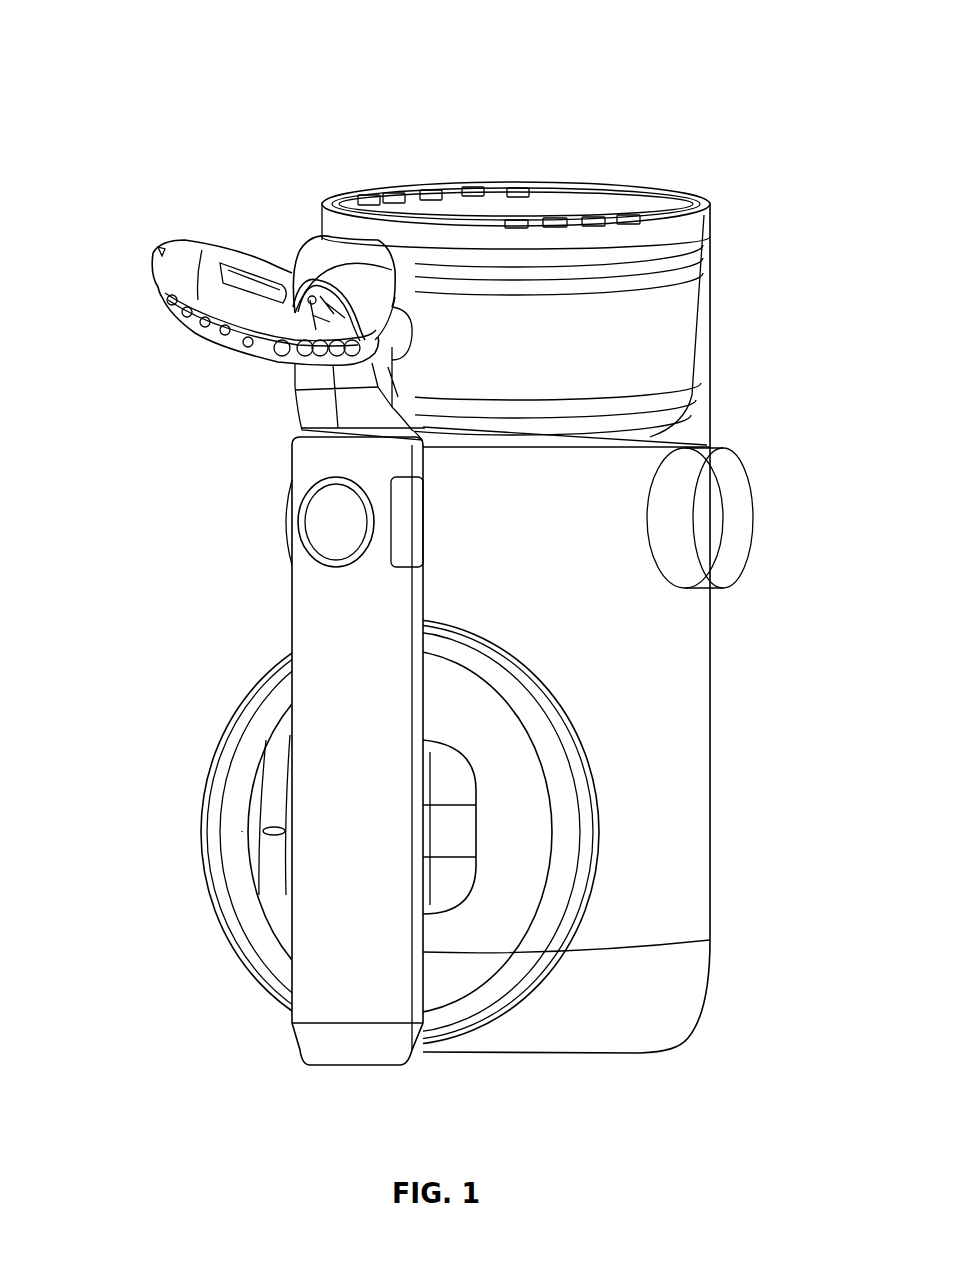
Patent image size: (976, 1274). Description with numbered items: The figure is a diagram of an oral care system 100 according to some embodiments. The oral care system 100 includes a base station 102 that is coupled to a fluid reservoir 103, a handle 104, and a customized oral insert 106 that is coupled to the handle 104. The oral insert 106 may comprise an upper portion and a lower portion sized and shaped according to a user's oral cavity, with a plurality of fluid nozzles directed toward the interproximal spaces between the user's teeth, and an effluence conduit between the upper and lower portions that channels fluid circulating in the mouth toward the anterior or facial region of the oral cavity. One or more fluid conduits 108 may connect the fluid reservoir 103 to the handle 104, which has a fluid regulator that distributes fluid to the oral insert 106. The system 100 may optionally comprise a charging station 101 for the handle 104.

The oral care system 100 is at (118, 50).
The charging station 101 is at (485, 882).
The base station 102 is at (786, 262).
The fluid reservoir 103 is at (712, 400).
The handle 104 is at (375, 766).
The customized oral insert 106 is at (163, 218).
The fluid conduits 108 is at (175, 798).